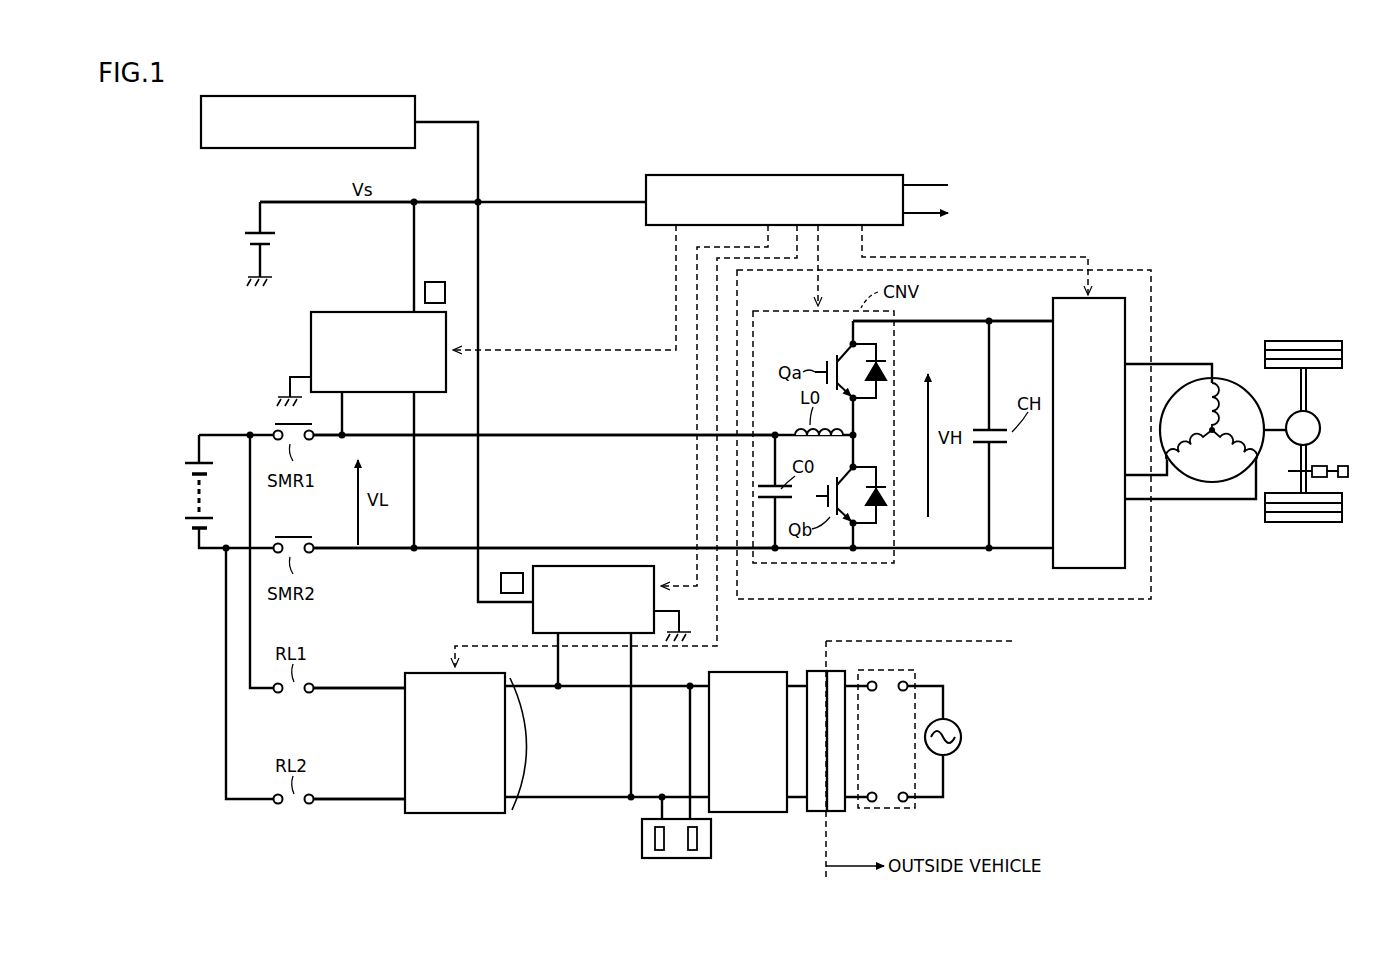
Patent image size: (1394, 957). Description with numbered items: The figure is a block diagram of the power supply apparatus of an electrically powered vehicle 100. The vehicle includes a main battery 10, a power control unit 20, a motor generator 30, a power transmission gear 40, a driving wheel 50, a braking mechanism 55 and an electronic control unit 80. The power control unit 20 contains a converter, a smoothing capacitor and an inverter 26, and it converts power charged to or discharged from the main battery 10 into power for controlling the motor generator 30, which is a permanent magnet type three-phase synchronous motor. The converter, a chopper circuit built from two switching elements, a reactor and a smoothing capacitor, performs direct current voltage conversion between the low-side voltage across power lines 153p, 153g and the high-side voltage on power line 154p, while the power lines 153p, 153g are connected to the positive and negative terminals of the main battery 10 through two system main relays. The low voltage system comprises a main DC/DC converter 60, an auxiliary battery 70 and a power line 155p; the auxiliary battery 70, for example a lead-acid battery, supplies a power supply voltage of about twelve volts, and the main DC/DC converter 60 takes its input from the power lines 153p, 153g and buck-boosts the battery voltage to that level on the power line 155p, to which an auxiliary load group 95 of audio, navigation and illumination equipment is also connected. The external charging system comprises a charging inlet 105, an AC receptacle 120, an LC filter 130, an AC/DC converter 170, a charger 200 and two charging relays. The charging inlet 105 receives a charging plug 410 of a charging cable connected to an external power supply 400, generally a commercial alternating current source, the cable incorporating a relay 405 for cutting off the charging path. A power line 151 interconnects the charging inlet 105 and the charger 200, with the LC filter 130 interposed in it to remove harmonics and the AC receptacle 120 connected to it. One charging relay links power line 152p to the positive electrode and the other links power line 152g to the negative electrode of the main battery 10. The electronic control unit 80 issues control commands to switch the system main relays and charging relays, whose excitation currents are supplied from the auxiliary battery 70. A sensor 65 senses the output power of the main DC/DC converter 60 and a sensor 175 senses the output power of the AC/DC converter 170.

The main battery 10 is at (188, 497).
The power control unit 20 is at (1151, 575).
The inverter 26 is at (1100, 298).
The motor generator 30 is at (1228, 378).
The power transmission gear 40 is at (1318, 418).
The driving wheel 50 is at (1316, 341).
The braking mechanism 55 is at (1341, 457).
The main DC/DC converter 60 is at (311, 340).
The sensor 65 is at (433, 281).
The auxiliary battery 70 is at (246, 241).
The electronic control unit 80 is at (897, 175).
The auxiliary load group 95 is at (201, 123).
The electrically powered vehicle 100 is at (1167, 236).
The charging inlet 105 is at (816, 670).
The AC receptacle 120 is at (711, 838).
The LC filter 130 is at (756, 671).
The power line 151 is at (516, 812).
The power line 152p is at (348, 685).
The power line 152g is at (347, 804).
The power line 153p is at (513, 432).
The power line 153g is at (513, 545).
The power line 154p is at (1025, 318).
The power line 155p is at (316, 200).
The AC/DC converter 170 is at (533, 620).
The sensor 175 is at (501, 584).
The charger 200 is at (422, 815).
The external power supply 400 is at (962, 738).
The relay 405 is at (902, 810).
The charging plug 410 is at (838, 812).